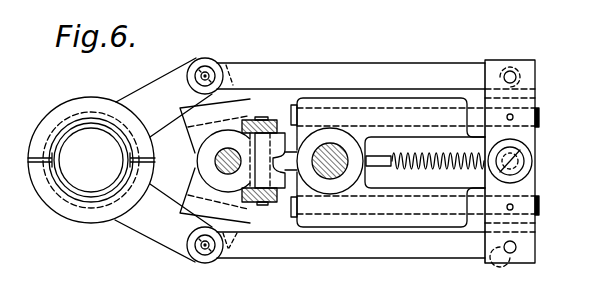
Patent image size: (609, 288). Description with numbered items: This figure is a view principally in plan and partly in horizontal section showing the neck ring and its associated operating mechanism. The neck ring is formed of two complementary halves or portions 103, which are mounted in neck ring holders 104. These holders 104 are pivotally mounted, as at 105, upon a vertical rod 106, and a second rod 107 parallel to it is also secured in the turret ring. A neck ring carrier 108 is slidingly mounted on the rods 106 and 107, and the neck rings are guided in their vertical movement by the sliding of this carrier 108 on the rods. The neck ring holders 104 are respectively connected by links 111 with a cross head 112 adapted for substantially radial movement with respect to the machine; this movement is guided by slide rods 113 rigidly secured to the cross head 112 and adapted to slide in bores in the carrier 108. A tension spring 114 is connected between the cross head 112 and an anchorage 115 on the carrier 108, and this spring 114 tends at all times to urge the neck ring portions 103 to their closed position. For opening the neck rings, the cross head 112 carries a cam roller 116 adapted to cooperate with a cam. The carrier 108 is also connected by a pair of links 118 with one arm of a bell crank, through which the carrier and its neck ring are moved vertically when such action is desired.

The neck ring halves 103 is at (68, 130).
The neck ring holders 104 is at (71, 105).
The pivotal mounting 105 is at (218, 164).
The vertical rod 106 is at (228, 148).
The rod 107 is at (348, 152).
The neck ring carrier 108 is at (303, 130).
The links 111 is at (388, 74).
The cross head 112 is at (527, 190).
The slide rods 113 is at (477, 112).
The tension spring 114 is at (437, 172).
The anchorage 115 is at (370, 167).
The cam roller 116 is at (527, 151).
The links 118 is at (275, 108).